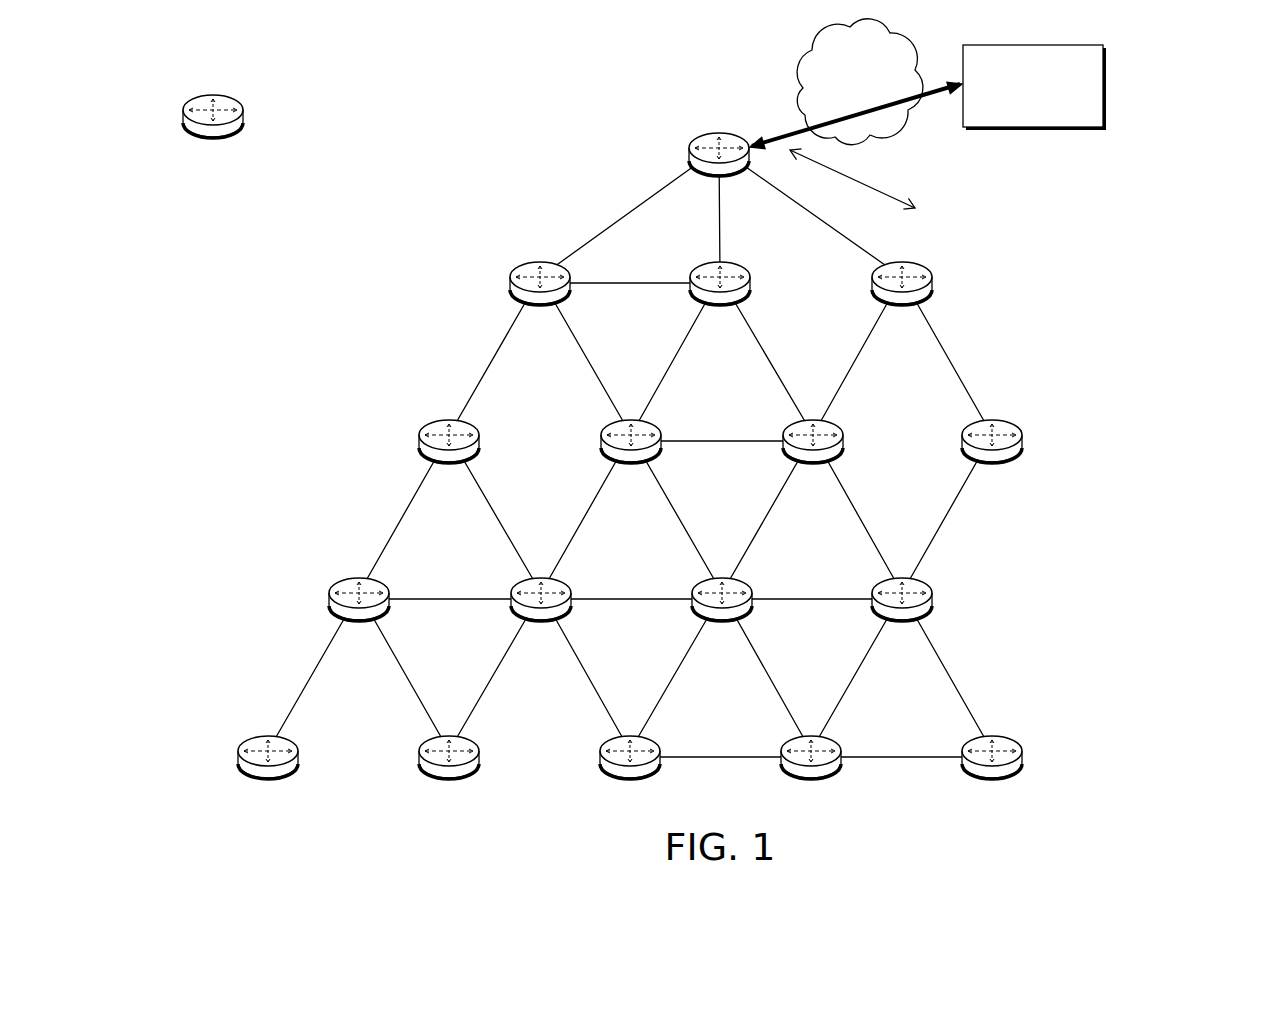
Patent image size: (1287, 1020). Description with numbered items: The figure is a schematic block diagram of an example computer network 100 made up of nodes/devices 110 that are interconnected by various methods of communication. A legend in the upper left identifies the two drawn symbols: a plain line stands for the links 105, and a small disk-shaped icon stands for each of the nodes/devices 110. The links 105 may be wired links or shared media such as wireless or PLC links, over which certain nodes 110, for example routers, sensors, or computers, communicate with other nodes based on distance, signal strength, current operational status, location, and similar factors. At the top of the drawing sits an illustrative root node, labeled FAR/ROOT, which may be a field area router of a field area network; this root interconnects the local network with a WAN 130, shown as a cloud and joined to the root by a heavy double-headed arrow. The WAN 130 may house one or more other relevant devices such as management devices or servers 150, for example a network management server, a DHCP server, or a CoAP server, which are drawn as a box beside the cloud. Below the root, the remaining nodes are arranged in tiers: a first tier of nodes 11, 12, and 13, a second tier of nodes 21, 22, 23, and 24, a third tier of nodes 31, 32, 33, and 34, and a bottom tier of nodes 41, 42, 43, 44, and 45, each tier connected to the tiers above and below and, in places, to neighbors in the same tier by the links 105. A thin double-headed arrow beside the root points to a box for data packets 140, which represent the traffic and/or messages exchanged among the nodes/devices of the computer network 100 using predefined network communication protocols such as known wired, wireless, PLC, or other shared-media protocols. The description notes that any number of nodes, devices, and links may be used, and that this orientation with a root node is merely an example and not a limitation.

The computer network 100 is at (1198, 88).
The links 105 is at (173, 68).
The nodes/devices 110 is at (287, 116).
The WAN 130 is at (836, 98).
The data packets 140 is at (837, 191).
The servers 150 is at (1017, 108).
The node 11 is at (540, 300).
The node 12 is at (720, 300).
The node 13 is at (902, 300).
The node 21 is at (449, 458).
The node 22 is at (631, 458).
The node 23 is at (813, 458).
The node 24 is at (992, 458).
The node 31 is at (359, 615).
The node 32 is at (541, 615).
The node 33 is at (722, 615).
The node 34 is at (902, 615).
The node 41 is at (268, 773).
The node 42 is at (449, 773).
The node 43 is at (630, 773).
The node 44 is at (811, 773).
The node 45 is at (992, 773).